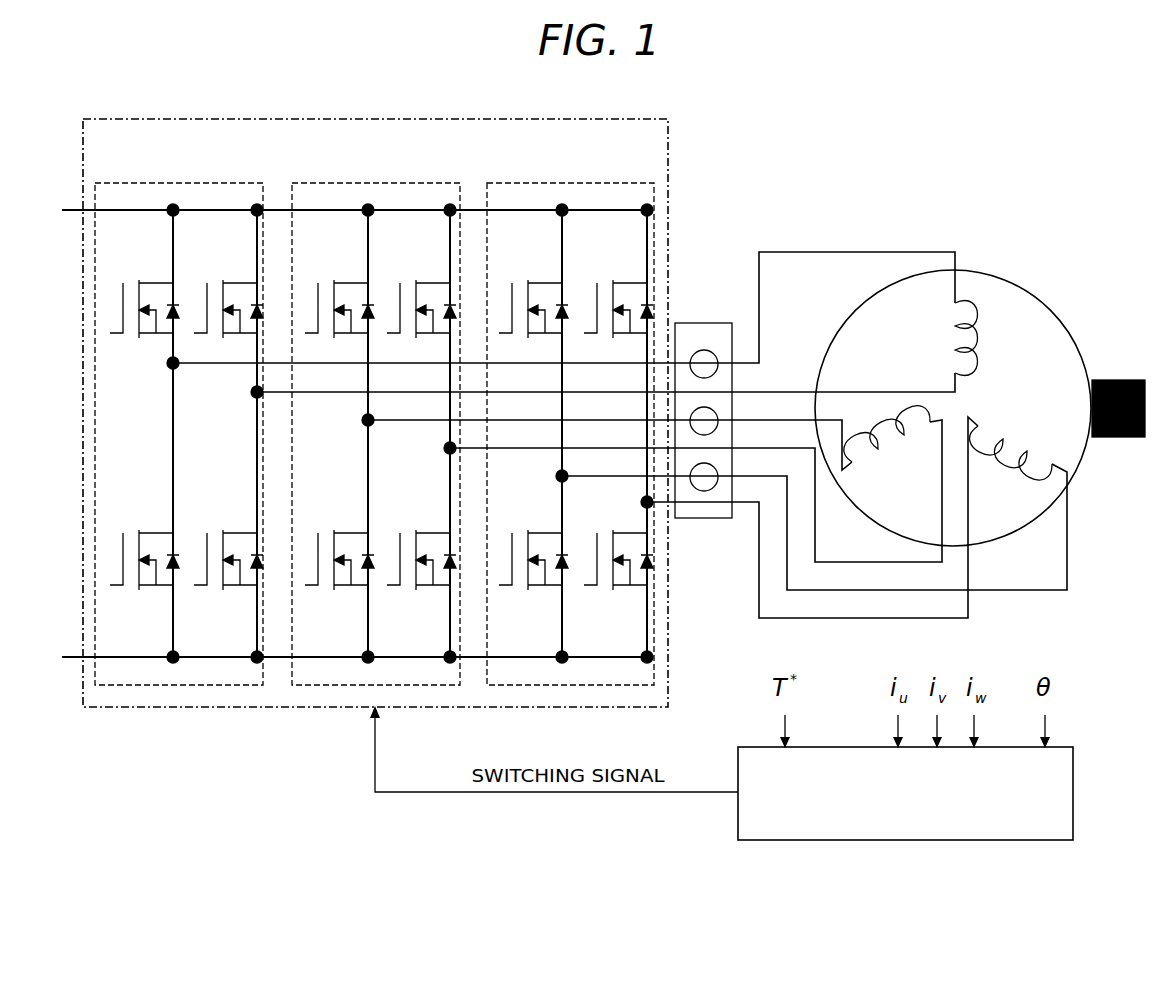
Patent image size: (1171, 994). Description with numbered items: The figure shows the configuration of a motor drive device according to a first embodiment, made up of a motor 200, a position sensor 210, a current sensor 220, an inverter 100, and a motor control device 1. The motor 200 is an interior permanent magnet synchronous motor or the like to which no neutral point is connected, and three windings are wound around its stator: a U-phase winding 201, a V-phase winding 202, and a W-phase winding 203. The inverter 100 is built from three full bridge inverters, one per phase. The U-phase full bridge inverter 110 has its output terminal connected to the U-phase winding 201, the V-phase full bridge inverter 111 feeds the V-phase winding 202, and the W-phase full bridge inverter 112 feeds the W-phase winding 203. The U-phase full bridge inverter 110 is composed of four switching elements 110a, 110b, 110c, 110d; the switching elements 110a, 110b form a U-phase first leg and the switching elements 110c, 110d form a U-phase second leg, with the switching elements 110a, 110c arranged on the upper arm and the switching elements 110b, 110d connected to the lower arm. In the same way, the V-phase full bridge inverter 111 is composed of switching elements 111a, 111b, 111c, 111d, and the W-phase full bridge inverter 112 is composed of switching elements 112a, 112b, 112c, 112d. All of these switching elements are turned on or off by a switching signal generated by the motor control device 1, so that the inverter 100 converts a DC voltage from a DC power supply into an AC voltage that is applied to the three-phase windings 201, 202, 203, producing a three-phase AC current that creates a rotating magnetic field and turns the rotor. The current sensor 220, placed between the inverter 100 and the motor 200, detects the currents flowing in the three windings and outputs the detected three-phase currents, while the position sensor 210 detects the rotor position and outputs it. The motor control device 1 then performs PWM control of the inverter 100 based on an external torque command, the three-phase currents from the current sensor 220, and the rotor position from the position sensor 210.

The motor control device 1 is at (905, 793).
The inverter 100 is at (378, 119).
The U-phase full bridge inverter 110 is at (180, 183).
The V-phase full bridge inverter 111 is at (378, 183).
The W-phase full bridge inverter 112 is at (568, 183).
The switching element 110a is at (149, 283).
The switching element 110b is at (153, 586).
The switching element 110c is at (233, 283).
The switching element 110d is at (237, 586).
The switching element 111a is at (344, 283).
The switching element 111b is at (348, 586).
The switching element 111c is at (426, 283).
The switching element 111d is at (430, 586).
The switching element 112a is at (538, 283).
The switching element 112b is at (542, 586).
The switching element 112c is at (623, 283).
The switching element 112d is at (627, 586).
The current sensor 220 is at (692, 323).
The motor 200 is at (997, 274).
The U-phase winding 201 is at (956, 344).
The V-phase winding 202 is at (885, 446).
The W-phase winding 203 is at (1020, 447).
The position sensor 210 is at (1097, 385).